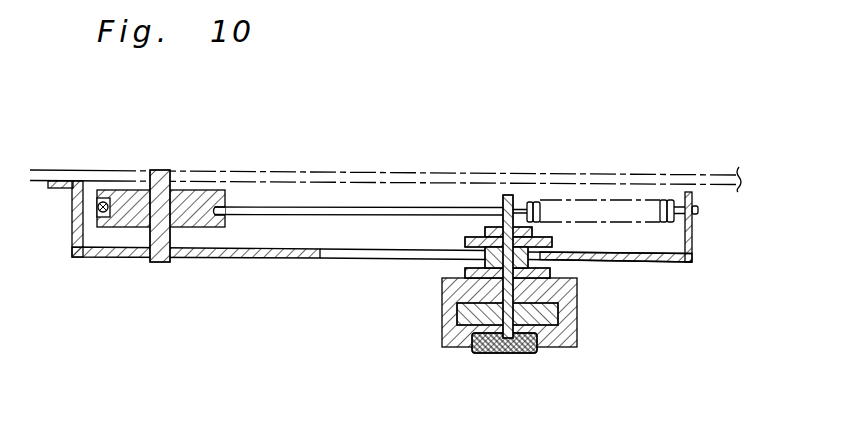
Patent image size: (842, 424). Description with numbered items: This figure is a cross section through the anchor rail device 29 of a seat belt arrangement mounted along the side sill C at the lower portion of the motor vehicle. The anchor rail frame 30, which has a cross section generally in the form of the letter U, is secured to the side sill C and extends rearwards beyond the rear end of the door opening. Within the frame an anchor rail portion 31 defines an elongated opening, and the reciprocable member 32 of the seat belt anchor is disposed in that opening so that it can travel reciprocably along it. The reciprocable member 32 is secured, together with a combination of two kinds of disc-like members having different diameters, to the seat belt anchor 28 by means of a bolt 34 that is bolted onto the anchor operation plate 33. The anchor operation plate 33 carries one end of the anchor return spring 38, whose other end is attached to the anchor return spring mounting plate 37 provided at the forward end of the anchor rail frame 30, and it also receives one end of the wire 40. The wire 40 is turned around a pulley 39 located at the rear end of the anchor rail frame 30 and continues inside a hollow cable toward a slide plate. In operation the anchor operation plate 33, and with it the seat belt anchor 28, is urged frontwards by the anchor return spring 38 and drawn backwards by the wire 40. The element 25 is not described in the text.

The side sill C is at (330, 173).
The wire 40 is at (418, 206).
The anchor operation plate 33 is at (508, 194).
The anchor return spring 38 is at (537, 200).
The anchor return spring mounting plate 37 is at (687, 193).
The anchor rail device 29 is at (163, 277).
The pulley 39 is at (203, 228).
The anchor rail frame 30 is at (268, 259).
The anchor rail portion 31 is at (343, 252).
The reciprocable member 32 is at (551, 272).
The bearing member 25 is at (552, 313).
The seat belt anchor 28 is at (570, 342).
The bolt 34 is at (533, 355).